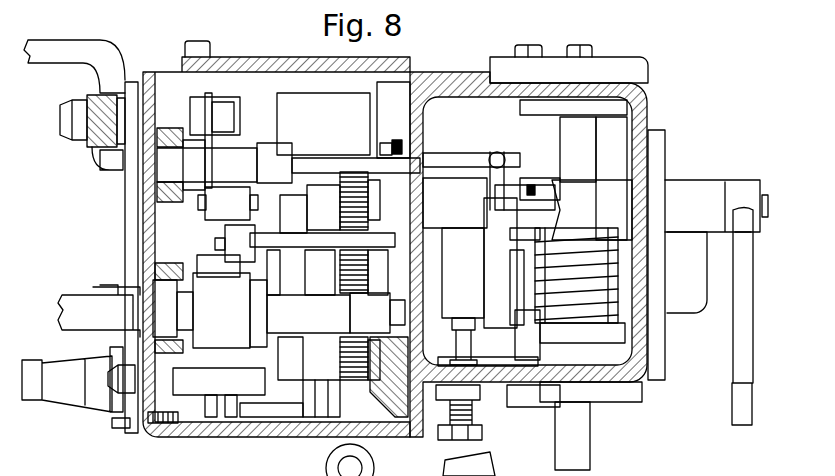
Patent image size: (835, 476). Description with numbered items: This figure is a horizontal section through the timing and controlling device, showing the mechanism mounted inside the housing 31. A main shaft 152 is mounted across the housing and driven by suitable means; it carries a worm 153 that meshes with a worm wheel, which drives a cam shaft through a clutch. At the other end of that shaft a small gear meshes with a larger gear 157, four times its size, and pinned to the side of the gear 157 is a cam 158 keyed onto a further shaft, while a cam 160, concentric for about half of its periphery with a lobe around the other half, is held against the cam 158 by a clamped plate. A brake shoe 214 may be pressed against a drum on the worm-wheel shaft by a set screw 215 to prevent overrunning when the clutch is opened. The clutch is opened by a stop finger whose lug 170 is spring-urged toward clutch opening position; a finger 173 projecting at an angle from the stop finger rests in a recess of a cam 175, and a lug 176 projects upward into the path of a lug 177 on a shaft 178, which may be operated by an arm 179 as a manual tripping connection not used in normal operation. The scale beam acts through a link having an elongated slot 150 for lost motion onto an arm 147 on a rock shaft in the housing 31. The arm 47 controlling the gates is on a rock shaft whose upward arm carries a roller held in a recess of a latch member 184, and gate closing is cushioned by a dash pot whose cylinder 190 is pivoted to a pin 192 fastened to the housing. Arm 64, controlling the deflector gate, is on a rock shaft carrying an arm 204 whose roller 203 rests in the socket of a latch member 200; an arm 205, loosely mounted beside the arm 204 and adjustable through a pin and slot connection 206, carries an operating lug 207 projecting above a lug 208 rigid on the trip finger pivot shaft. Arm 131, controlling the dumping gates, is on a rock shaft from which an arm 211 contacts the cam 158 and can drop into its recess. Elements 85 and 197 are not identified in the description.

The housing 31 is at (640, 115).
The arm 47 is at (105, 130).
The arm 64 is at (74, 300).
The bearing block 85 is at (320, 162).
The arm 131 is at (35, 395).
The arm 147 is at (88, 25).
The elongated slot 150 is at (285, 430).
The main shaft 152 is at (578, 450).
The worm 153 is at (610, 318).
The gear 157 is at (360, 382).
The cam 158 is at (318, 192).
The cam 160 is at (295, 368).
The lug 170 is at (497, 150).
The finger 173 is at (522, 232).
The cam 175 is at (515, 338).
The lug 176 is at (512, 210).
The lug 177 is at (543, 195).
The shaft 178 is at (770, 212).
The arm 179 is at (742, 302).
The latch member 184 is at (210, 108).
The cylinder 190 is at (279, 340).
The pin 192 is at (220, 415).
The gear 197 is at (300, 205).
The latch member 200 is at (240, 158).
The roller 203 is at (228, 207).
The arm 204 is at (237, 266).
The arm 205 is at (265, 272).
The pin and slot connection 206 is at (232, 243).
The operating lug 207 is at (322, 239).
The lug 208 is at (390, 252).
The arm 211 is at (328, 382).
The shoe 214 is at (462, 345).
The set screw 215 is at (478, 433).